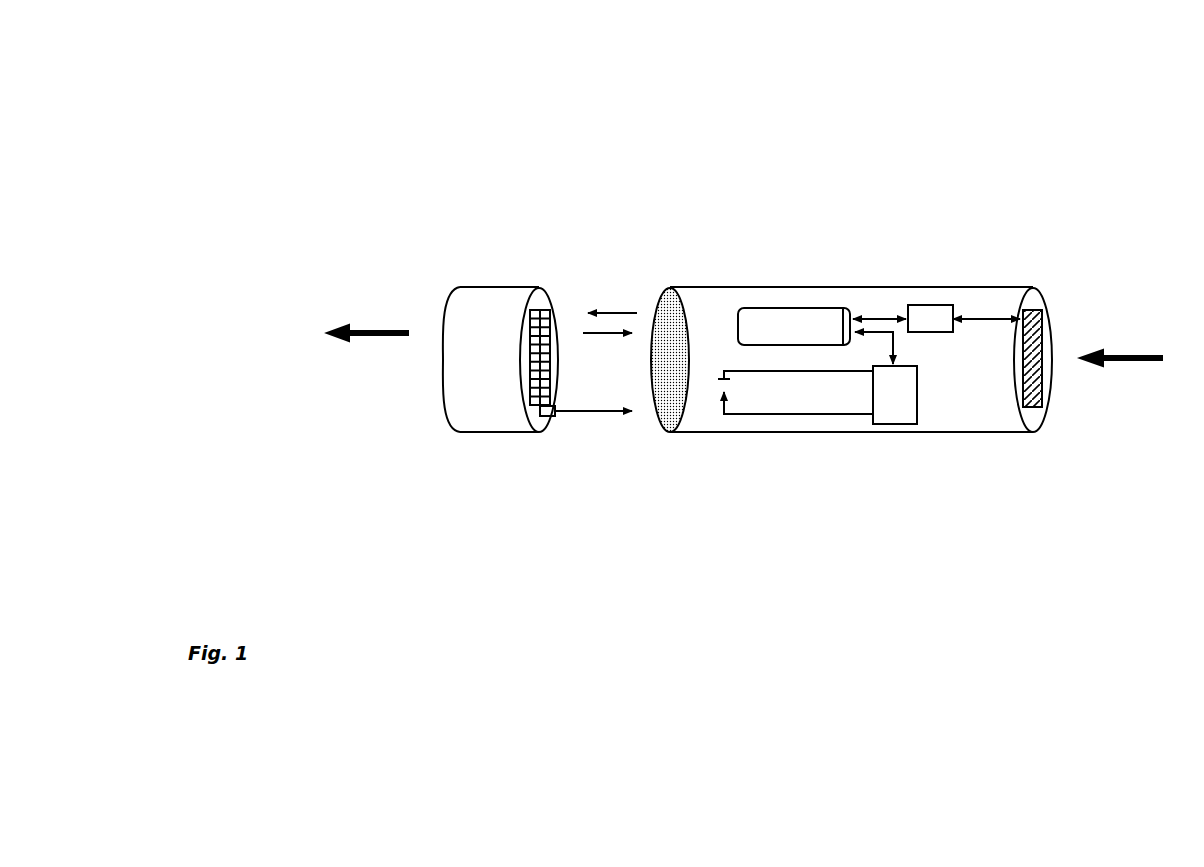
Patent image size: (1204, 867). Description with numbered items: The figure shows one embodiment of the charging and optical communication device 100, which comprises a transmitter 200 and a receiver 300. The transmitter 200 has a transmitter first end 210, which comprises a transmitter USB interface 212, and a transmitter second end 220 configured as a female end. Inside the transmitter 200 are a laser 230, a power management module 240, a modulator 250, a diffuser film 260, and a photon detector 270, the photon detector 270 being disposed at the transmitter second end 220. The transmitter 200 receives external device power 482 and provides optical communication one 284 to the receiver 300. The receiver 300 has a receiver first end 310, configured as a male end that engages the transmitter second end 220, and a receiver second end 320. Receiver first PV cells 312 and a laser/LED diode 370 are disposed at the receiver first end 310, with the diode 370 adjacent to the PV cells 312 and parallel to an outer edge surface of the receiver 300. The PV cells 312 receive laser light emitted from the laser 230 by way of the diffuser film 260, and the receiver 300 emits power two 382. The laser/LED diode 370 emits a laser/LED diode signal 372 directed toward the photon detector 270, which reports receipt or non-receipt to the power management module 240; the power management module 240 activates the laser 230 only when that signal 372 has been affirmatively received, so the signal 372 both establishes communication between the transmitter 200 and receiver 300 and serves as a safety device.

The device 100 is at (436, 107).
The transmitter 200 is at (853, 288).
The transmitter first end 210 is at (1033, 433).
The transmitter USB interface 212 is at (1040, 300).
The transmitter second end 220 is at (683, 434).
The laser 230 is at (800, 308).
The power management 240 is at (938, 303).
The modulator 250 is at (917, 397).
The diffuser film 260 is at (672, 289).
The photon detector 270 is at (733, 389).
The optical communication one 284 is at (612, 322).
The receiver 300 is at (522, 291).
The receiver first end 310 is at (543, 434).
The receiver first PV cells 312 is at (532, 290).
The receiver second end 320 is at (460, 433).
The laser/LED diode 370 is at (549, 418).
The laser/LED diode signal 372 is at (590, 414).
The power two 382 is at (398, 337).
The external device power 482 is at (1150, 360).